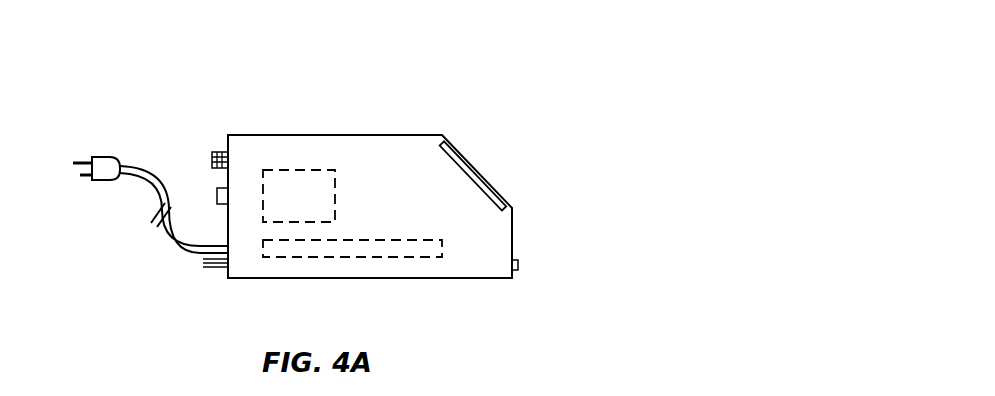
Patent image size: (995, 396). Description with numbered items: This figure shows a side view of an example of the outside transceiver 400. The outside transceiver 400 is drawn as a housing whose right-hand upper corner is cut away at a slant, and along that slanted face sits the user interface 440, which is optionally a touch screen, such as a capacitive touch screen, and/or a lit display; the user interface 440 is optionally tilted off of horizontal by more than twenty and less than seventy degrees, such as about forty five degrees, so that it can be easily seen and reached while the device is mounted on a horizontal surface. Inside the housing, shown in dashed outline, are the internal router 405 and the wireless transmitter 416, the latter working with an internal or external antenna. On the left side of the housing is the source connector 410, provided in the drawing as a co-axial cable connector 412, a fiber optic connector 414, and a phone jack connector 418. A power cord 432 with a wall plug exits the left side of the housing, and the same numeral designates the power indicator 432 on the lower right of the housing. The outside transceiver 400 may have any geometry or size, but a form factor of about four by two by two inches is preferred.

The outside transceiver 400 is at (535, 42).
The source connector 410 is at (156, 108).
The power cord and power indicator 432 is at (104, 157).
The fiber optic connector 414 is at (212, 270).
The co-axial cable connector 412 is at (219, 151).
The phone jack connector 418 is at (217, 196).
The wireless transmitter 416 is at (303, 168).
The internal router 405 is at (418, 237).
The user interface 440 is at (496, 183).